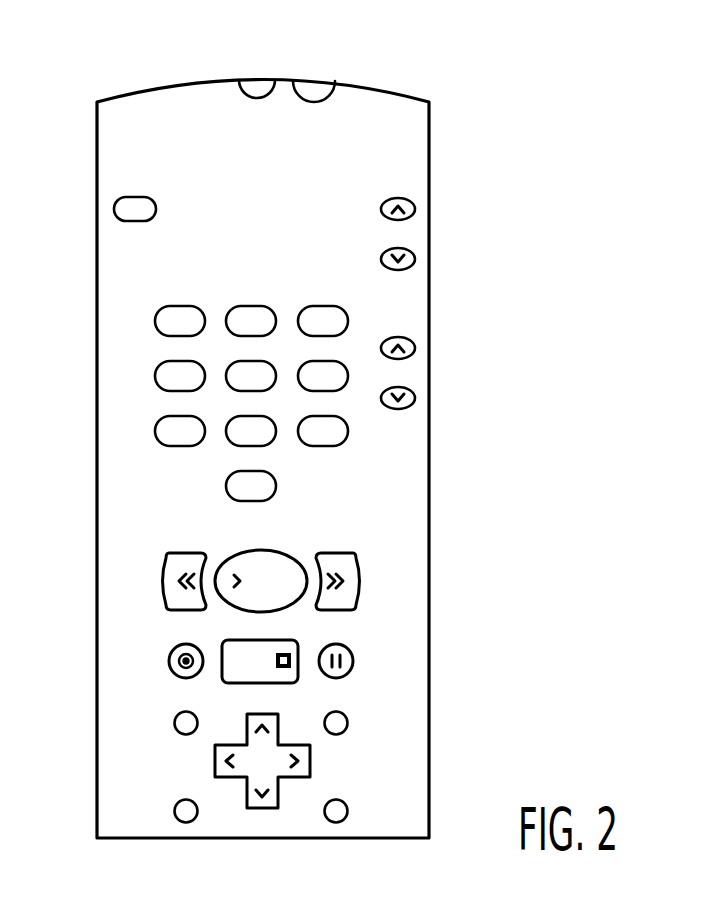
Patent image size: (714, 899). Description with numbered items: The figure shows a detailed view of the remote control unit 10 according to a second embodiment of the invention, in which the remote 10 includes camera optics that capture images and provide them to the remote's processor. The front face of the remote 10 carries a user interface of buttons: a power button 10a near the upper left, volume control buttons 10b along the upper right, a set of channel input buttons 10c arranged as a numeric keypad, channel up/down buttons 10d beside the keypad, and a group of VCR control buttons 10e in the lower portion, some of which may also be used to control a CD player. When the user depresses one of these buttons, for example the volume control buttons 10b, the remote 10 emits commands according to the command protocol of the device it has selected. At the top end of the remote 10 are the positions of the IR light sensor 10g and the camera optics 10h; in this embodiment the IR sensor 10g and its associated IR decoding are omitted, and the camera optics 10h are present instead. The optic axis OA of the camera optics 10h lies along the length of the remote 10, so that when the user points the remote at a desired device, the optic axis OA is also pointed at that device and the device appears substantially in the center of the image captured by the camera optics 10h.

The remote control unit 10 is at (430, 147).
The power button 10a is at (114, 201).
The volume control buttons 10b is at (440, 191).
The channel input buttons 10c is at (155, 318).
The channel up/down buttons 10d is at (440, 328).
The VCR control buttons 10e is at (440, 538).
The IR light sensor 10g is at (257, 80).
The camera optics 10h is at (318, 80).
The optic axis OA is at (314, 80).